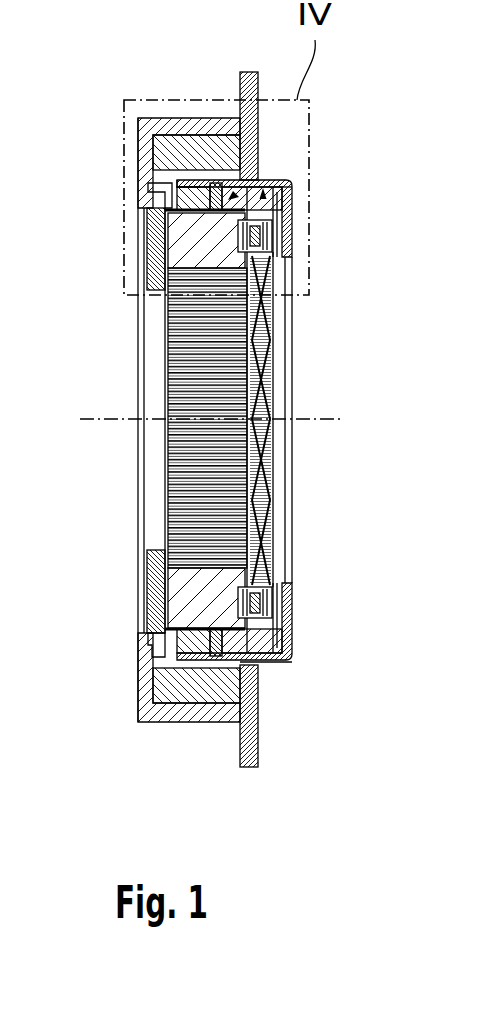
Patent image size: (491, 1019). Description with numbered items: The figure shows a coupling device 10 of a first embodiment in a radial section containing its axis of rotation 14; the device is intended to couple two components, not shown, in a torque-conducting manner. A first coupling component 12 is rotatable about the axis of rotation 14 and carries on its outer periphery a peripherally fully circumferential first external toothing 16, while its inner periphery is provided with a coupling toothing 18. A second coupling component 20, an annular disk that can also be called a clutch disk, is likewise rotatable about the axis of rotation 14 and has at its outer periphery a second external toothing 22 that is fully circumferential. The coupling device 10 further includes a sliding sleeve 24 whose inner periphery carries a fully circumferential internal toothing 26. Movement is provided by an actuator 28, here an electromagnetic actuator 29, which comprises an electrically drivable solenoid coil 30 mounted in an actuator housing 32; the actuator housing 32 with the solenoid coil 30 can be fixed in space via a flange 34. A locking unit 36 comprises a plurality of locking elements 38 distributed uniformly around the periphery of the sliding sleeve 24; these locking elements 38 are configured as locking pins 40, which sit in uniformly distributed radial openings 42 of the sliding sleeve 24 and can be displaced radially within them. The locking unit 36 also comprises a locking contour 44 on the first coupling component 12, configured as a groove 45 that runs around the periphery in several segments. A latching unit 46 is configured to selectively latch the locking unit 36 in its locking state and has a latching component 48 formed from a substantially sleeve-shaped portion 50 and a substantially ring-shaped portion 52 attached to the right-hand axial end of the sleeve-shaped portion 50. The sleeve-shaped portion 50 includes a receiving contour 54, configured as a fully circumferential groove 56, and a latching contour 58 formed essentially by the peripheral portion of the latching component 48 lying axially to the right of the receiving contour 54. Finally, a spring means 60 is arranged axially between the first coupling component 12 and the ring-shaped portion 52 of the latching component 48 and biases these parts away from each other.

The coupling device 10 is at (369, 145).
The first coupling component 12 is at (254, 596).
The axis of rotation 14 is at (338, 417).
The first external toothing 16 is at (272, 654).
The coupling toothing 18 is at (226, 470).
The second coupling component 20 is at (157, 618).
The second external toothing 22 is at (160, 647).
The sliding sleeve 24 is at (283, 636).
The internal toothing 26 is at (180, 616).
The actuator 28 is at (159, 477).
The electromagnetic actuator 29 is at (162, 737).
The solenoid coil 30 is at (218, 688).
The actuator housing 32 is at (237, 710).
The flange 34 is at (257, 752).
The locking unit 36 is at (282, 240).
The locking elements 38 is at (155, 184).
The locking pins 40 is at (230, 197).
The radial openings 42 is at (261, 180).
The locking contour 44 is at (200, 201).
The groove 45 is at (135, 218).
The latching unit 46 is at (332, 235).
The latching component 48 is at (167, 153).
The sleeve-shaped portion 50 is at (216, 183).
The ring-shaped portion 52 is at (290, 190).
The receiving contour 54 is at (148, 108).
The groove 56 is at (185, 178).
The latching contour 58 is at (266, 224).
The spring means 60 is at (284, 544).